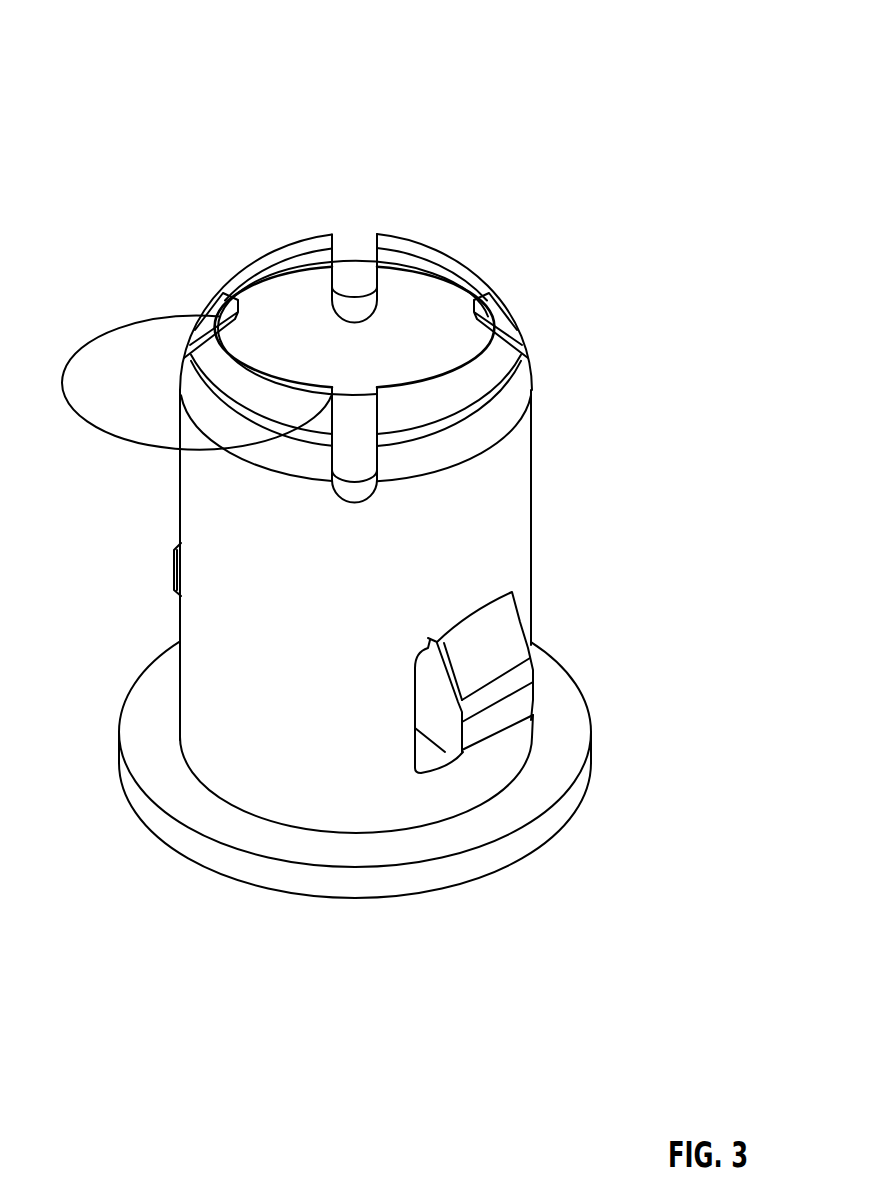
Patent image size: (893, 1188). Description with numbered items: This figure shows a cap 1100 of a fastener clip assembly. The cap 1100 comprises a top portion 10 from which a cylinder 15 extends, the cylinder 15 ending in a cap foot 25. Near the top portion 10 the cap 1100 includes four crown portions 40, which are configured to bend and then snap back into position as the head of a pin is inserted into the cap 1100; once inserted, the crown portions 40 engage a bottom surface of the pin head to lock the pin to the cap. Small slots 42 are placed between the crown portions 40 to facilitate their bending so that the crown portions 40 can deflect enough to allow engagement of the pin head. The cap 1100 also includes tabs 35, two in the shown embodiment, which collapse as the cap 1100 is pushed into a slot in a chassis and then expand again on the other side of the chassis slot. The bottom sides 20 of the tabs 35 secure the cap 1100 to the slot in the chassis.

The cap 1100 is at (397, 458).
The top portion 10 is at (407, 308).
The cylinder 15 is at (485, 550).
The bottom sides of tabs 20 is at (518, 731).
The cap foot 25 is at (547, 785).
The tabs 35 is at (488, 671).
The crown portions 40 is at (236, 375).
The small slots 42 is at (342, 418).